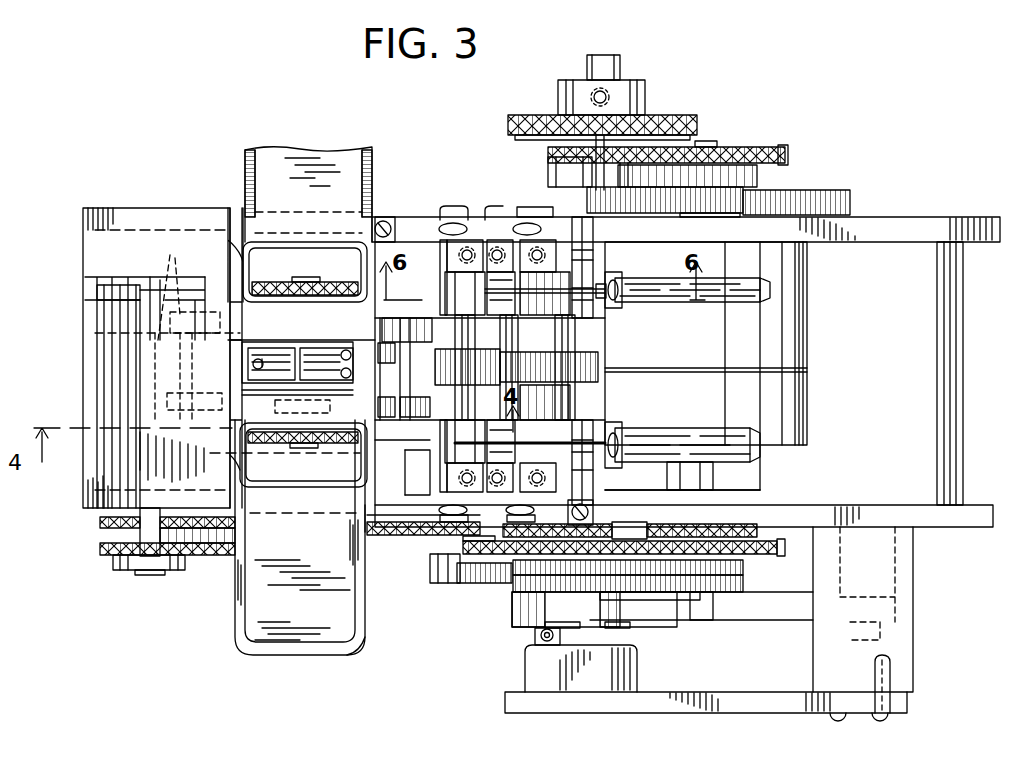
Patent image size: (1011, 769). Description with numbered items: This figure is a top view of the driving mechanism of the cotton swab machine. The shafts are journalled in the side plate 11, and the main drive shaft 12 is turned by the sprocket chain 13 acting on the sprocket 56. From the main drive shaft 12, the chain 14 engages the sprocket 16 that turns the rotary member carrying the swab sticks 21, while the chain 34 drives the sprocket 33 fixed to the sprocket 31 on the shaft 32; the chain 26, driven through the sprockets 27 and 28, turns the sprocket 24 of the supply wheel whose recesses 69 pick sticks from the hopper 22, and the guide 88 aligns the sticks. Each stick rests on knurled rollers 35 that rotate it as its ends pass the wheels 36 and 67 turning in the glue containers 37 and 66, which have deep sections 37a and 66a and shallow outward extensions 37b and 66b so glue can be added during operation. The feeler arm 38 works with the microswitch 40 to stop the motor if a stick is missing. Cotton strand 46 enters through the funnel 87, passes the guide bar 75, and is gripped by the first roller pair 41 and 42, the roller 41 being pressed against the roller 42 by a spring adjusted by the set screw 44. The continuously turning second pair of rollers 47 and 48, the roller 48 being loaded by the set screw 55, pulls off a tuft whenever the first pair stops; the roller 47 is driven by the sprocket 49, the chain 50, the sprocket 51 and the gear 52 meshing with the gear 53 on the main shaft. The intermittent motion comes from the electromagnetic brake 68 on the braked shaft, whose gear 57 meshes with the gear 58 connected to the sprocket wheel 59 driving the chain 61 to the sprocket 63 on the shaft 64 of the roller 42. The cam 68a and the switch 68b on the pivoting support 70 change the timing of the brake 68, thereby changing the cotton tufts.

The side plate 11 is at (903, 232).
The main drive shaft 12 is at (620, 64).
The sprocket chain 13 is at (688, 125).
The chain 14 is at (420, 535).
The sprocket 16 is at (373, 532).
The swab stick 21 is at (440, 357).
The hopper 22 is at (76, 346).
The sprocket 24 is at (125, 562).
The chain 26 is at (222, 545).
The sprocket 27 is at (180, 558).
The sprocket 28 is at (133, 508).
The sprocket 31 is at (760, 531).
The shaft 32 is at (702, 490).
The sprocket 33 is at (780, 554).
The chain 34 is at (660, 530).
The rollers 35 is at (403, 450).
The wheel 36 is at (292, 282).
The container 37 is at (384, 162).
The deep section 37a is at (240, 225).
The shallow outward extension 37b is at (278, 150).
The feeler arm 38 is at (362, 452).
The microswitch 40 is at (335, 352).
The roller 41 is at (578, 310).
The roller 42 is at (555, 420).
The set screw 44 is at (533, 236).
The strand of cotton 46 is at (695, 318).
The roller 47 is at (484, 240).
The roller 48 is at (462, 230).
The sprocket 49 is at (465, 547).
The chain 50 is at (540, 564).
The sprocket 51 is at (632, 554).
The gear 52 is at (651, 584).
The gear 53 is at (462, 578).
The set screw 55 is at (447, 218).
The sprocket 56 is at (632, 97).
The gear 57 is at (845, 203).
The gear 58 is at (715, 195).
The sprocket wheel 59 is at (790, 155).
The chain 61 is at (626, 157).
The sprocket 63 is at (560, 171).
The shaft 64 is at (548, 140).
The container 66 is at (296, 670).
The deep section 66a is at (238, 456).
The shallow outward extension 66b is at (352, 635).
The wheel 67 is at (262, 442).
The electromagnetic brake 68 is at (792, 352).
The cam 68a is at (523, 607).
The switch 68b is at (612, 670).
The recess 69 is at (125, 357).
The pivoting support 70 is at (637, 700).
The guide bar 75 is at (545, 291).
The funnel 87 is at (620, 302).
The guide 88 is at (416, 466).